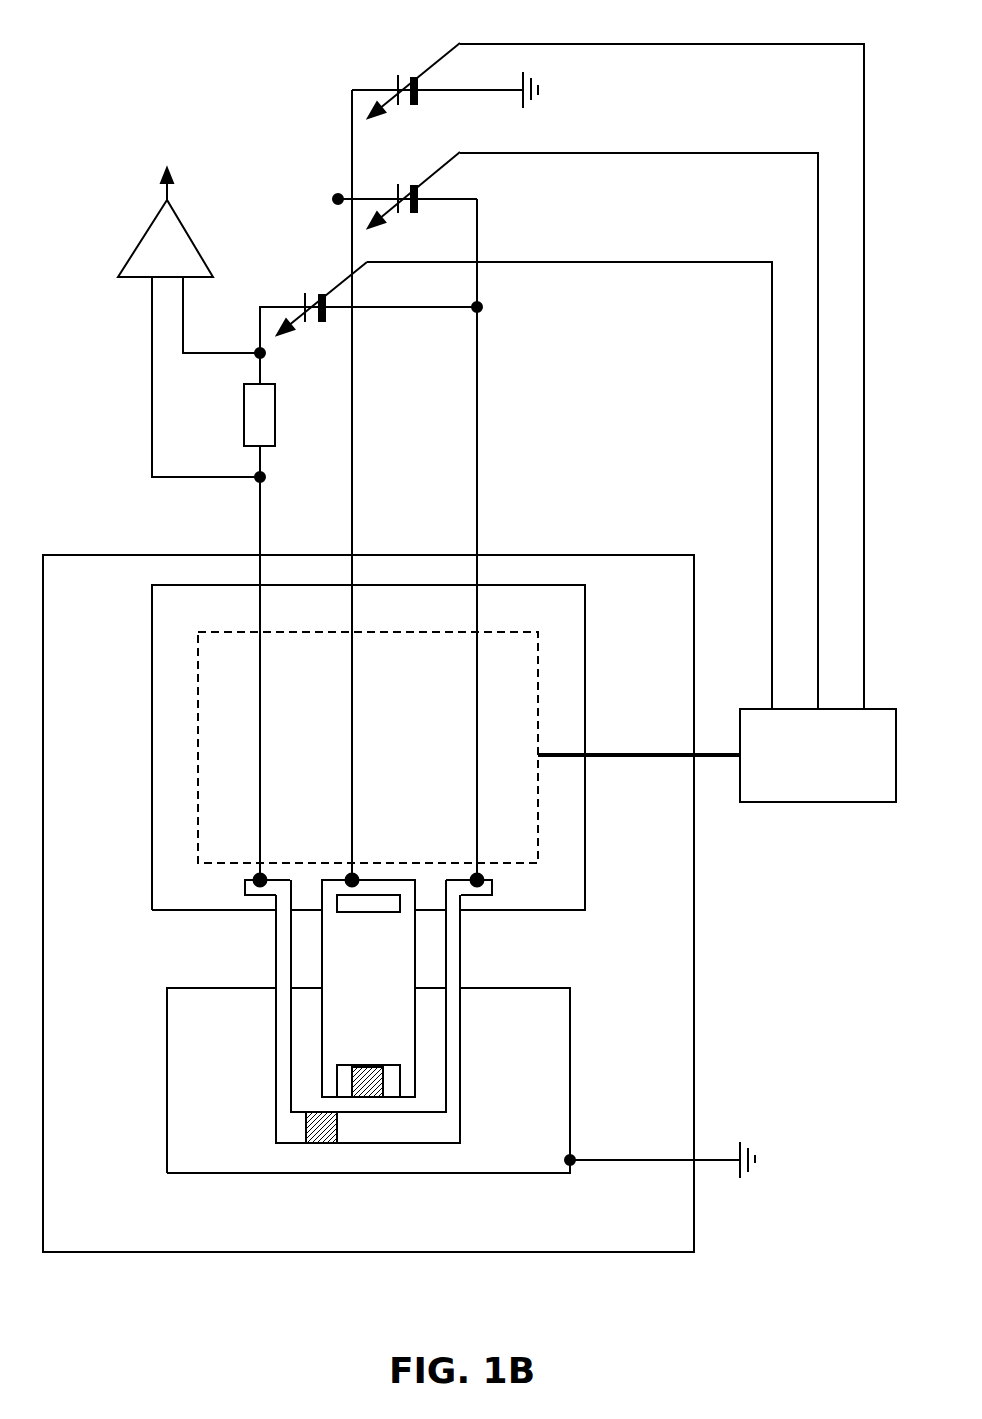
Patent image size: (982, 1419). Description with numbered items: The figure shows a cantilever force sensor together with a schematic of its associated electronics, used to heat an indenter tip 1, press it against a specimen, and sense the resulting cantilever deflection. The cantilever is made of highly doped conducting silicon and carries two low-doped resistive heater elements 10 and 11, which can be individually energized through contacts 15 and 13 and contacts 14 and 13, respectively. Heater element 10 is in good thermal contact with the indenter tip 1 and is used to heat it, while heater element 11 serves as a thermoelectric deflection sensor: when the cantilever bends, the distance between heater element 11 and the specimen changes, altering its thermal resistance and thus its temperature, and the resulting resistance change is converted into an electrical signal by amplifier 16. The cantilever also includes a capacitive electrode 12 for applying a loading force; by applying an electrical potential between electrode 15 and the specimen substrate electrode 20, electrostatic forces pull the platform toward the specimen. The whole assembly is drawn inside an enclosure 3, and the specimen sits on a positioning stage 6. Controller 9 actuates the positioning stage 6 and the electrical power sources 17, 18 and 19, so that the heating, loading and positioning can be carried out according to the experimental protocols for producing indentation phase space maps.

The indenter tip 1 is at (368, 1067).
The housing 3 is at (570, 1082).
The positioning stage 6 is at (538, 663).
The controller 9 is at (631, 423).
The heater element 10 is at (368, 1097).
The heater element 11 is at (322, 1143).
The capacitive electrode 12 is at (368, 957).
The contact 13 is at (493, 885).
The contact 14 is at (245, 885).
The electrode 15 is at (368, 879).
The amplifier 16 is at (108, 246).
The electrical power source 17 is at (282, 285).
The electrical power source 18 is at (371, 173).
The electrical power source 19 is at (372, 66).
The specimen substrate electrode 20 is at (660, 1155).